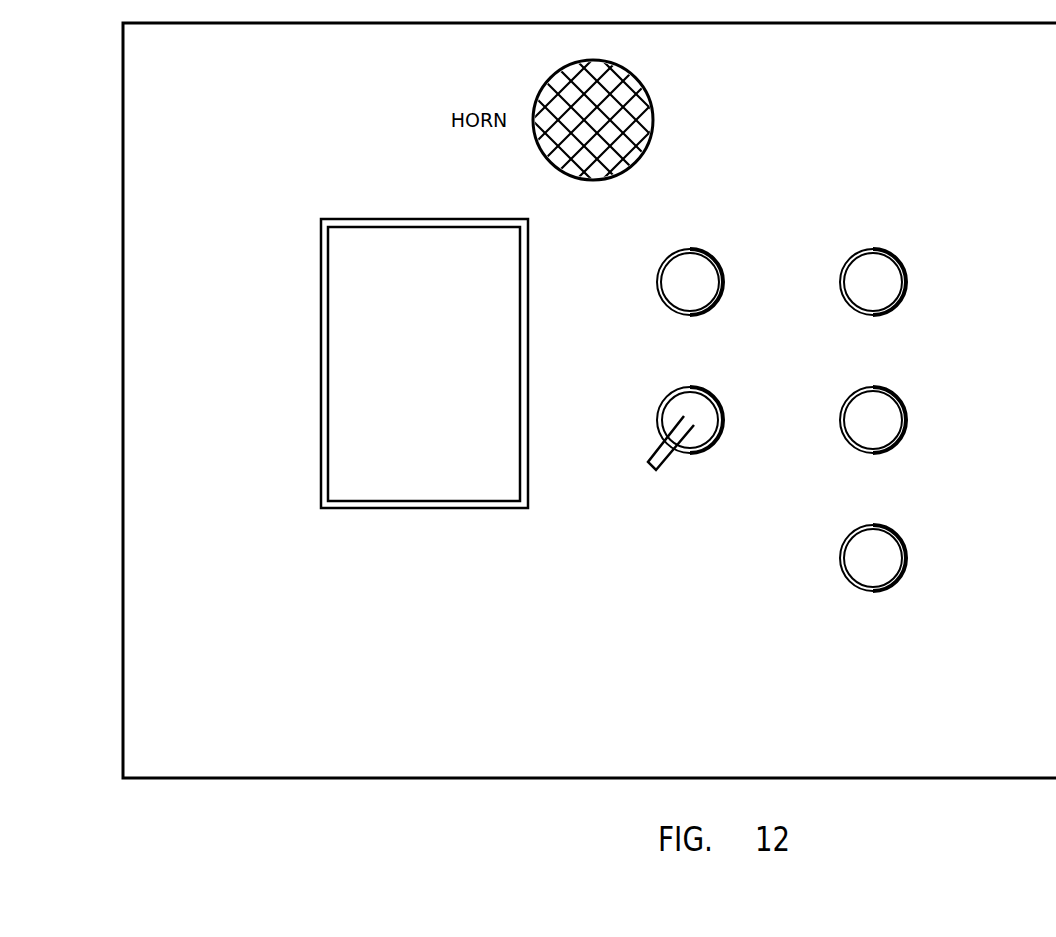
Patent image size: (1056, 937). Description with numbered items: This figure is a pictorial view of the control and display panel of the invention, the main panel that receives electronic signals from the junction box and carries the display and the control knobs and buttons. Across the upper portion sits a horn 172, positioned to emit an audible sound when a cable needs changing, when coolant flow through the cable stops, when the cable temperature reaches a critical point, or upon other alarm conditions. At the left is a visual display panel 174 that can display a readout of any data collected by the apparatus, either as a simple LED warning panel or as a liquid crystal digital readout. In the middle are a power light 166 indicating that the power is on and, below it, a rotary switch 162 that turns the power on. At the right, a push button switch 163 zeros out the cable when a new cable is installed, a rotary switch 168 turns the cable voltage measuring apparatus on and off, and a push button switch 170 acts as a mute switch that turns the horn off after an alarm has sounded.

The horn 172 is at (653, 112).
The visual display panel 174 is at (412, 238).
The power light 166 is at (664, 291).
The rotary switch 162 is at (712, 446).
The push button switch 163 is at (896, 283).
The rotary switch 168 is at (893, 437).
The push button switch 170 is at (893, 563).